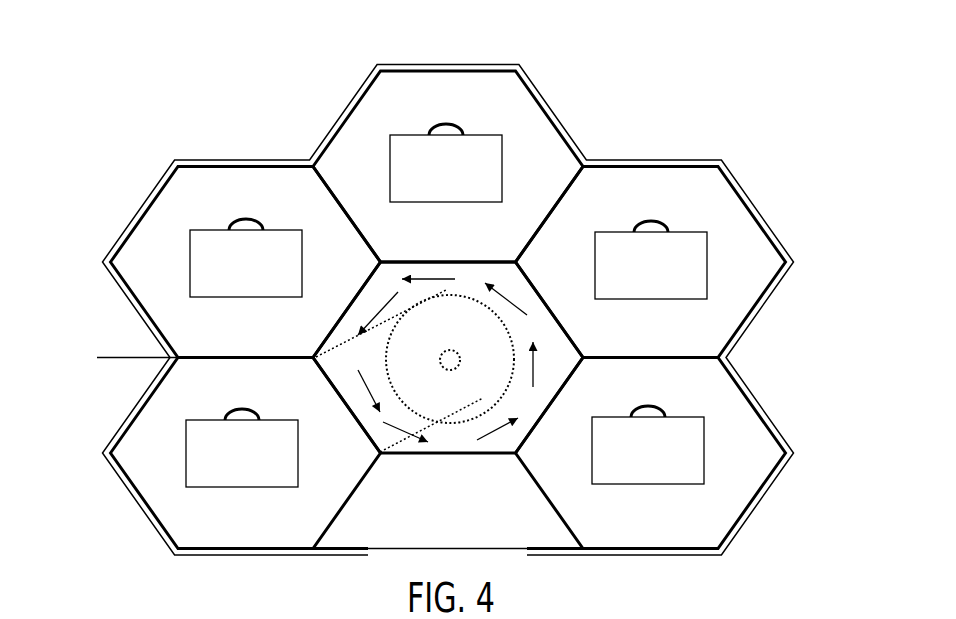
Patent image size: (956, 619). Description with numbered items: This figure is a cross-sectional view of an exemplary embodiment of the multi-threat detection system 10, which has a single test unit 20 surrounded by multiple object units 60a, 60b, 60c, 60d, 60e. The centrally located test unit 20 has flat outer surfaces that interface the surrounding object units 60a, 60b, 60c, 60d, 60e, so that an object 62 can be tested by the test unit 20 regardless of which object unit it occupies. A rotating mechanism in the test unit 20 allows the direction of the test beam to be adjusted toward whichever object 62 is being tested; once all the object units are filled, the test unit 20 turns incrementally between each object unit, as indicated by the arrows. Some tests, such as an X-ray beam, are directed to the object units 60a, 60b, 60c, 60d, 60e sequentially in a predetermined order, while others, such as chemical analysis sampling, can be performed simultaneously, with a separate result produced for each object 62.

The multi-threat detection system 10 is at (268, 78).
The test unit 20 is at (316, 358).
The object unit 60a is at (206, 453).
The object unit 60b is at (140, 202).
The object unit 60c is at (545, 97).
The object unit 60d is at (760, 207).
The object unit 60e is at (747, 378).
The object 62 is at (251, 466).